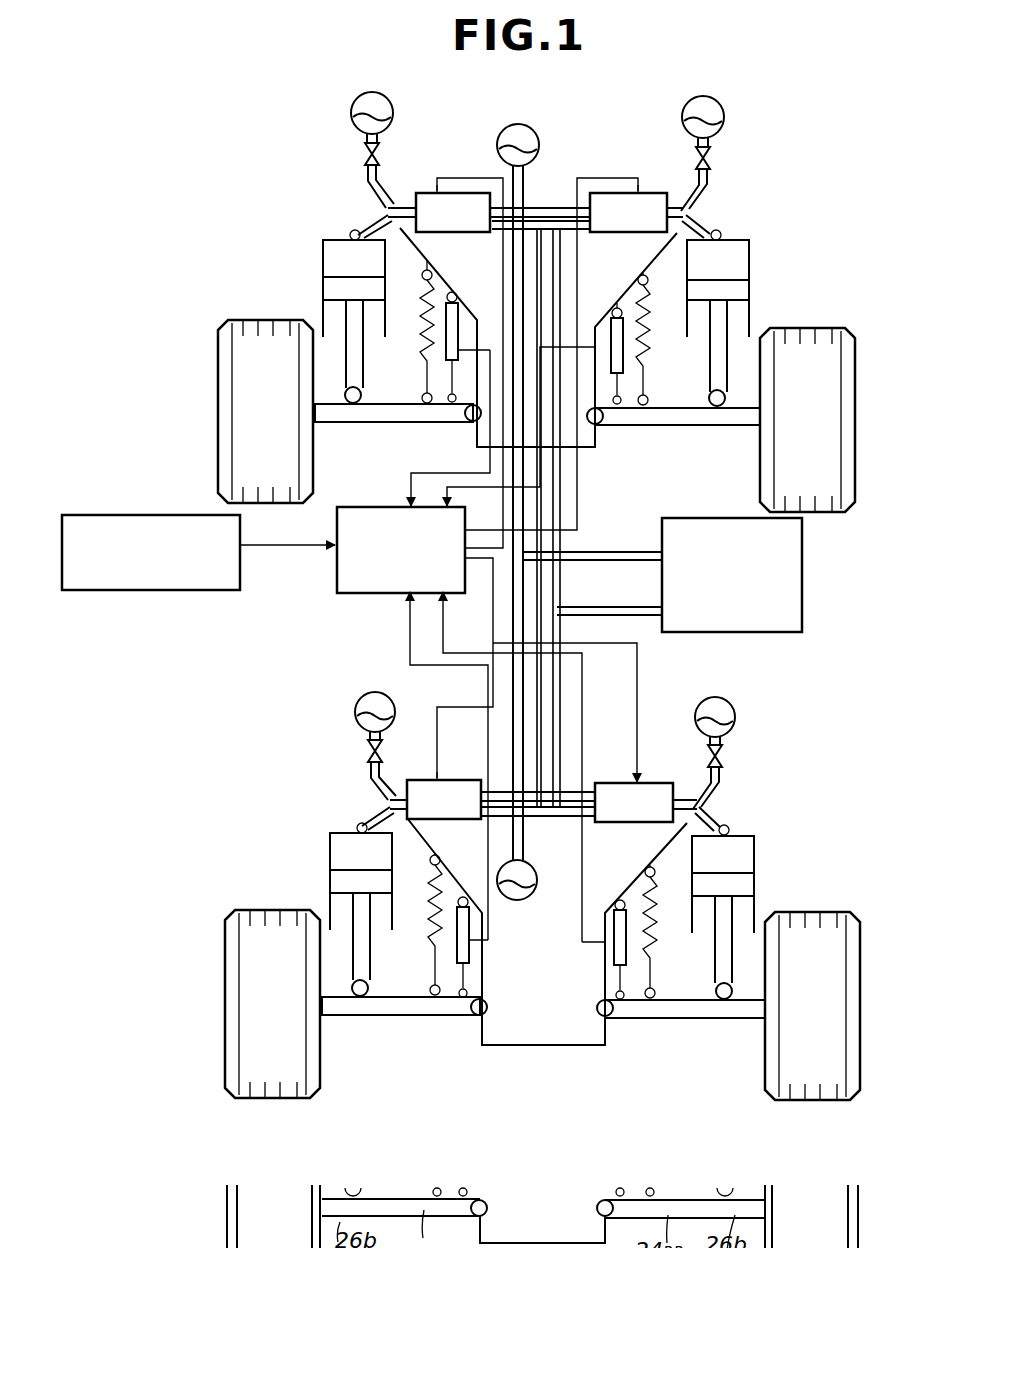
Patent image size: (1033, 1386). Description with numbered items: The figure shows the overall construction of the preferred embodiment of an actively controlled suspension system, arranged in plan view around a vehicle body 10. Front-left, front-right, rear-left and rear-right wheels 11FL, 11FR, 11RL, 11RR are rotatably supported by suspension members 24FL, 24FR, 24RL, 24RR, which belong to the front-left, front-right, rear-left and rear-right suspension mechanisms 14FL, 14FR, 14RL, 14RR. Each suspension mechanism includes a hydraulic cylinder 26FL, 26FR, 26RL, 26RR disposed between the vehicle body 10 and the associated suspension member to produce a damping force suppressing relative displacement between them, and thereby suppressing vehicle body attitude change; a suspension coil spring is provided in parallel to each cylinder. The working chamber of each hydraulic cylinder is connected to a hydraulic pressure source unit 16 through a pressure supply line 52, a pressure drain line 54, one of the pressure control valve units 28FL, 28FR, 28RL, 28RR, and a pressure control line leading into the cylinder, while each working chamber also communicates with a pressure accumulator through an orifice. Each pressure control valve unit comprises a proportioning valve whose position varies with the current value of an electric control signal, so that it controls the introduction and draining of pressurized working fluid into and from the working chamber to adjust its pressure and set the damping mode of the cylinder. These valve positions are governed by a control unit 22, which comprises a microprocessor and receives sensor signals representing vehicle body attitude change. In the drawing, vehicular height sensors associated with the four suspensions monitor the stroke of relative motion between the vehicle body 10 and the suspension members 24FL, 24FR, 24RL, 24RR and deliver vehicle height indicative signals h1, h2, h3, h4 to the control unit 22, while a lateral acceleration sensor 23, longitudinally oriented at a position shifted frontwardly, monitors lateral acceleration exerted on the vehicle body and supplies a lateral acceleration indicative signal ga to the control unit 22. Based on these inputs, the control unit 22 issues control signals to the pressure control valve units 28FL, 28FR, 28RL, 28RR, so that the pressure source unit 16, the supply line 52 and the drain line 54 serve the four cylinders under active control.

The vehicle body 10 is at (546, 1073).
The front-left wheel 11FL is at (245, 390).
The front-right wheel 11FR is at (822, 370).
The rear-left wheel 11RL is at (250, 993).
The rear-right wheel 11RR is at (828, 1060).
The front-left suspension mechanism 14FL is at (318, 258).
The front-right suspension mechanism 14FR is at (755, 262).
The rear-left suspension mechanism 14RL is at (325, 857).
The rear-right suspension mechanism 14RR is at (760, 855).
The hydraulic pressure source unit 16 is at (804, 548).
The control unit 22 is at (370, 595).
The lateral acceleration sensor 23 is at (160, 513).
The front-left suspension member 24FL is at (415, 418).
The front-right suspension member 24FR is at (677, 427).
The rear-left suspension member 24RL is at (422, 1013).
The rear-right suspension member 24RR is at (671, 1018).
The front-left hydraulic cylinder 26FL is at (367, 228).
The front-right hydraulic cylinder 26FR is at (738, 233).
The rear-left hydraulic cylinder 26RL is at (373, 818).
The rear-right hydraulic cylinder 26RR is at (740, 824).
The front-left pressure control valve unit 28FL is at (442, 192).
The front-right pressure control valve unit 28FR is at (655, 192).
The rear-left pressure control valve unit 28RL is at (415, 777).
The rear-right pressure control valve unit 28RR is at (661, 780).
The pressure supply line 52 is at (622, 552).
The pressure drain line 54 is at (619, 607).
The lateral acceleration signal ga is at (287, 531).
The front left height signal h1 is at (450, 428).
The front right height signal h2 is at (521, 430).
The rear left height signal h3 is at (449, 766).
The rear right height signal h4 is at (512, 767).